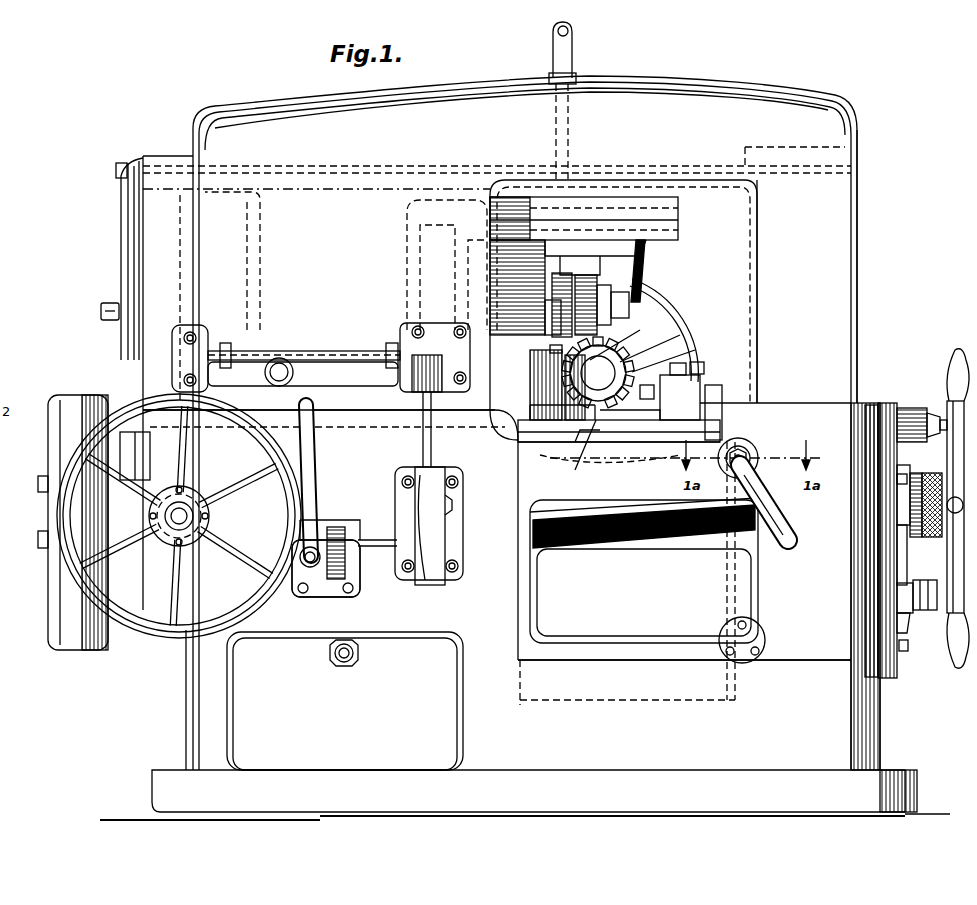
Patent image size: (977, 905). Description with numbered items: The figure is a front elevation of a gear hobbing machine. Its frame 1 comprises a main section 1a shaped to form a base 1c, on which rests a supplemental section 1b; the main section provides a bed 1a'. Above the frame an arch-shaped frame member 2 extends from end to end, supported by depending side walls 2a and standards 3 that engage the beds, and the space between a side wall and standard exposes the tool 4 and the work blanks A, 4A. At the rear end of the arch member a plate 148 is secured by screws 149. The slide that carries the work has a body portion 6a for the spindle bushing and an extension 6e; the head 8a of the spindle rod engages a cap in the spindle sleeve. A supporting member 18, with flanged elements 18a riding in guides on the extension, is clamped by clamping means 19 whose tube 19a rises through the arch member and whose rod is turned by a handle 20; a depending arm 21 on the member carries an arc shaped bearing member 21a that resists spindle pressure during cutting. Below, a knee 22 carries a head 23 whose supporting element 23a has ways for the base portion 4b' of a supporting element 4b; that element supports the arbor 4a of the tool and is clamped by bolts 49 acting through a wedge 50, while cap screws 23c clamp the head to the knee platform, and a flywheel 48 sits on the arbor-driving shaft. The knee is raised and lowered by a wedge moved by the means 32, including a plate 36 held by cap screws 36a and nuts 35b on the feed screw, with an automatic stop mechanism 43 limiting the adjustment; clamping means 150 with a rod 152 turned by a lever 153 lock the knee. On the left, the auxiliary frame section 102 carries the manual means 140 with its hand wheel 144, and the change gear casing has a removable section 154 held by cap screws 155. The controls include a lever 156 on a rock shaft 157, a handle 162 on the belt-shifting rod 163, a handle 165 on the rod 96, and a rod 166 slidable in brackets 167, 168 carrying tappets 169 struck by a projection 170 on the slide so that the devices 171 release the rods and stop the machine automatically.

The frame 1 is at (309, 701).
The main section 1a is at (634, 570).
The bed 1a' is at (319, 428).
The supplemental section 1b is at (829, 403).
The base 1c is at (653, 667).
The frame member 2 is at (867, 266).
The side wall 2a is at (498, 240).
The standard 3 is at (757, 278).
The tool 4 is at (960, 462).
The arbor 4a is at (598, 372).
The work blank 4A is at (640, 330).
The supporting element 4b is at (677, 335).
The base portion 4b' is at (581, 461).
The body portion 6a is at (410, 240).
The extension 6e is at (520, 200).
The head 8a is at (101, 312).
The supporting member 18 is at (664, 250).
The flanged element 18a is at (633, 200).
The clamping means 19 is at (547, 101).
The tube 19a is at (575, 78).
The handle 20 is at (570, 33).
The depending arm 21 is at (645, 265).
The arc shaped bearing member 21a is at (648, 298).
The knee 22 is at (722, 395).
The head 23 is at (619, 423).
The supporting element 23a is at (575, 432).
The cap screws 23c is at (724, 354).
The means for moving the wedge 32 is at (919, 491).
The nuts 35b is at (931, 585).
The plate 36 is at (905, 628).
The cap screws 36a is at (905, 474).
The automatic stop mechanism 43 is at (922, 415).
The flywheel 48 is at (695, 350).
The bolts 49 is at (650, 385).
The wedge 50 is at (700, 380).
The rod 96 is at (463, 484).
The auxiliary frame section 102 is at (135, 458).
The means for rotating the shaft 140 is at (179, 516).
The hand wheel 144 is at (250, 468).
The plate 148 is at (126, 232).
The screws 149 is at (116, 171).
The means for clamping the knee 150 is at (758, 456).
The rod 152 is at (760, 458).
The lever 153 is at (782, 520).
The removable section 154 is at (50, 420).
The cap screws 155 is at (32, 538).
The lever 156 is at (314, 482).
The rock shaft 157 is at (292, 597).
The handle 162 is at (348, 528).
The rod 163 is at (358, 560).
The handle 165 is at (445, 522).
The rod 166 is at (330, 351).
The bracket 167 is at (200, 337).
The bracket 168 is at (410, 340).
The tappets 169 is at (232, 350).
The projection 170 is at (293, 373).
The stopping devices 171 is at (411, 488).
The work blank A is at (560, 275).